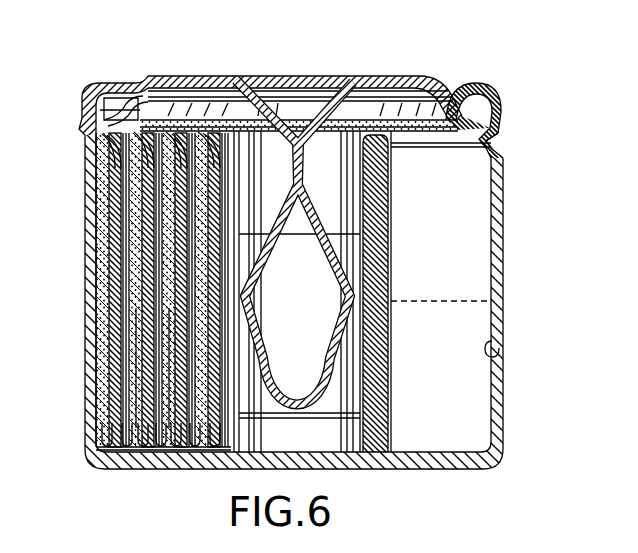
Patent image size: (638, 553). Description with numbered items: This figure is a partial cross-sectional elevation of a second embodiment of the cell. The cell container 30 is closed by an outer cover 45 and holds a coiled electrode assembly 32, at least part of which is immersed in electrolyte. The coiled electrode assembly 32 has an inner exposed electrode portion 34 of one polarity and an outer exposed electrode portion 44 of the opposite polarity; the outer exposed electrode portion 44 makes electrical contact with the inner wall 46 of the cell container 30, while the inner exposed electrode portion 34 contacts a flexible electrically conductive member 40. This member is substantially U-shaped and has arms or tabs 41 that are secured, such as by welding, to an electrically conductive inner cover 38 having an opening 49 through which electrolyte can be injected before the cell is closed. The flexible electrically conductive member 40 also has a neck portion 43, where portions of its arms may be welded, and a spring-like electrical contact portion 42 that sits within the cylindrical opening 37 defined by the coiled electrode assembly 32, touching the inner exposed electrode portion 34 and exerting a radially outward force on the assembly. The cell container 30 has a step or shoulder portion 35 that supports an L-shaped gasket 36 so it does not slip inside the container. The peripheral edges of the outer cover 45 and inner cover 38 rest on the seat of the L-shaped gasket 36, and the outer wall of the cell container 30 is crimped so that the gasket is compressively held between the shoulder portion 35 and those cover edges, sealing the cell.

The cell container 30 is at (497, 260).
The coiled electrode assembly 32 is at (172, 368).
The inner exposed electrode portion 34 is at (238, 407).
The step or shoulder portion 35 is at (496, 112).
The L-shaped gasket 36 is at (452, 82).
The cylindrical opening 37 is at (300, 408).
The electrically conductive inner cover 38 is at (137, 76).
The flexible electrically conductive member 40 is at (318, 208).
The arms or tabs 41 is at (208, 82).
The spring-like electrical contact portion 42 is at (340, 286).
The neck portion 43 is at (296, 149).
The outer exposed electrode portion 44 is at (95, 336).
The outer cover 45 is at (418, 68).
The inner wall 46 is at (491, 340).
The opening 49 is at (294, 96).